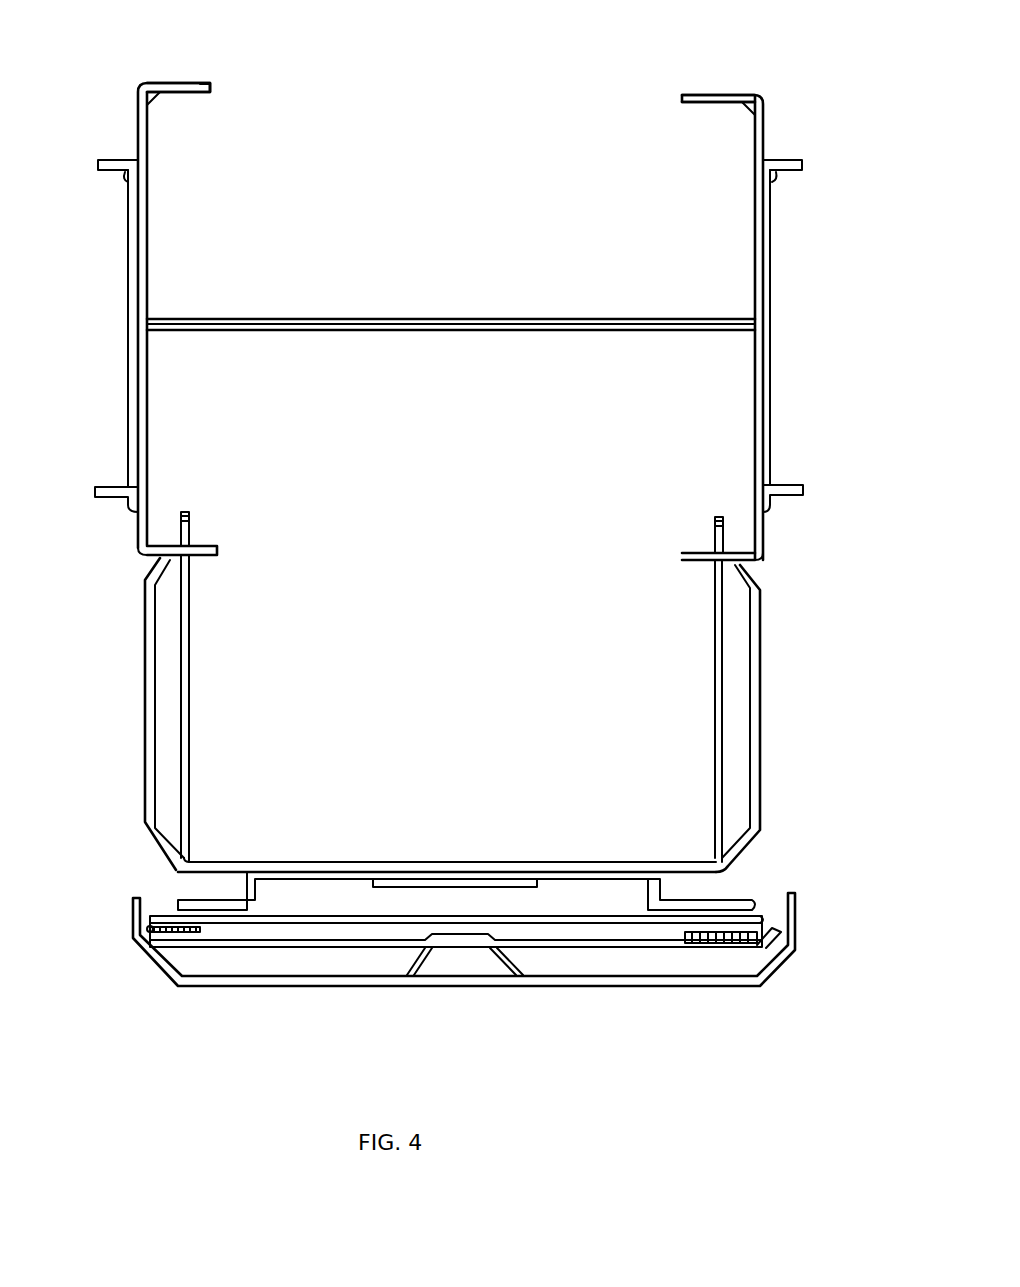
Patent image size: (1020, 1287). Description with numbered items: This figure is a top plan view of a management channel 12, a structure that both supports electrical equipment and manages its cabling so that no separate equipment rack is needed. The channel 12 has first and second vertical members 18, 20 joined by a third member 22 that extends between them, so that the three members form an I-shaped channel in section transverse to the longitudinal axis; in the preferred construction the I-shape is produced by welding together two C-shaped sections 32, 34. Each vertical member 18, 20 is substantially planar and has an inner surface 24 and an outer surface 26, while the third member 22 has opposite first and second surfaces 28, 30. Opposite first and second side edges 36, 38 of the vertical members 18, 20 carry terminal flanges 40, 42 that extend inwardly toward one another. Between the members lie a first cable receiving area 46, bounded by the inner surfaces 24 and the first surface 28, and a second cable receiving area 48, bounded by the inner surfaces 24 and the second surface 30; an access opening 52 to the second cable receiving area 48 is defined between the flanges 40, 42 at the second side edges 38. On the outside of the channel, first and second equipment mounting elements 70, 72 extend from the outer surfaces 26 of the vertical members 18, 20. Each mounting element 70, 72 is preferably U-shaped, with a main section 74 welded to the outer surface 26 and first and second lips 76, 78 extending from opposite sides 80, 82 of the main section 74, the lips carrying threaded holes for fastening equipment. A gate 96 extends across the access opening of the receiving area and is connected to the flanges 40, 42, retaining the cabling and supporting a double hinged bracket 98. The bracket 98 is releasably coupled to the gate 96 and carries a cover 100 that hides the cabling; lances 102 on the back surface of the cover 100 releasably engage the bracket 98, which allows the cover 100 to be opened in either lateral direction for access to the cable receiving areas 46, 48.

The management channel 12 is at (454, 302).
The first vertical member 18 is at (132, 522).
The second vertical member 20 is at (768, 524).
The third member 22 is at (392, 334).
The inner surface 24 is at (150, 428).
The outer surface 26 is at (132, 122).
The first surface 28 is at (470, 336).
The second surface 30 is at (508, 318).
The C-shaped section 32 is at (218, 334).
The C-shaped section 34 is at (274, 320).
The first side edge 36 is at (138, 560).
The second side edge 38 is at (152, 104).
The terminal flange 40 is at (208, 84).
The terminal flange 42 is at (726, 96).
The first cable receiving area 46 is at (750, 408).
The second cable receiving area 48 is at (150, 230).
The access opening 52 is at (216, 90).
The first equipment mounting element 70 is at (124, 458).
The second equipment mounting element 72 is at (778, 194).
The main section 74 is at (140, 282).
The first lip 76 is at (120, 498).
The second lip 78 is at (140, 158).
The first side of main section 80 is at (128, 484).
The second side of main section 82 is at (150, 182).
The gate 96 is at (196, 738).
The double hinged bracket 98 is at (240, 886).
The cover 100 is at (160, 970).
The lance 102 is at (404, 962).